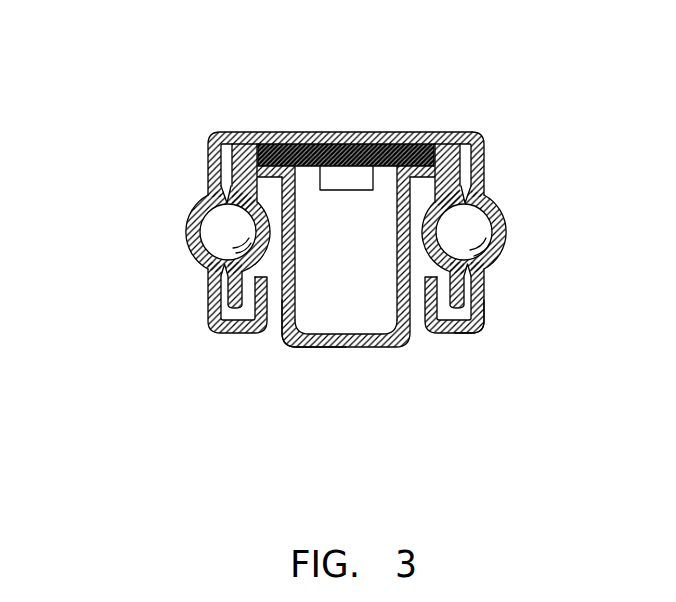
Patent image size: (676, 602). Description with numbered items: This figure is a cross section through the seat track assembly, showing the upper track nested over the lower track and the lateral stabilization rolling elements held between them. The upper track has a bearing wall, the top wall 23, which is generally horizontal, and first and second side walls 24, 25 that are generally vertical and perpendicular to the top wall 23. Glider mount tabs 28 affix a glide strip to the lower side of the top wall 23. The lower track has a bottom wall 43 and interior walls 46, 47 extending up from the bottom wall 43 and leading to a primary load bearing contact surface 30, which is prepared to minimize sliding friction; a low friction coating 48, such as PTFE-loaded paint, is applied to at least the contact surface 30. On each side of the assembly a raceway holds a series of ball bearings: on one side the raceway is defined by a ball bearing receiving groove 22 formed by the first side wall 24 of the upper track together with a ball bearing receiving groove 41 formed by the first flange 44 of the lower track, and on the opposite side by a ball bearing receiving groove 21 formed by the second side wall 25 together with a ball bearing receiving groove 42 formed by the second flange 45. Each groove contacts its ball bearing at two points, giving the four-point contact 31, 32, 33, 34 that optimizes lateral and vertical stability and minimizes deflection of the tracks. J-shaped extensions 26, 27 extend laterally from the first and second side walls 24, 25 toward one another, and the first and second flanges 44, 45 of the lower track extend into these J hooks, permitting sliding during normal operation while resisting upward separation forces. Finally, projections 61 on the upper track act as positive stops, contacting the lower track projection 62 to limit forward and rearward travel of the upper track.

The ball bearing receiving groove 21 is at (484, 239).
The ball bearing receiving groove 22 is at (187, 227).
The top wall 23 is at (366, 131).
The first side wall 24 is at (209, 290).
The second side wall 25 is at (483, 298).
The J-shaped extension 26 is at (238, 340).
The J-shaped extension 27 is at (466, 338).
The glider mount tabs 28 is at (345, 131).
The primary load bearing contact surface 30 is at (242, 131).
The four-point contact 31 is at (203, 197).
The four-point contact 32 is at (197, 272).
The four-point contact 33 is at (497, 252).
The four-point contact 34 is at (484, 214).
The ball bearing receiving groove 41 is at (298, 243).
The ball bearing receiving groove 42 is at (396, 230).
The bottom wall 43 is at (353, 350).
The first flange 44 is at (210, 317).
The second flange 45 is at (428, 328).
The interior wall 46 is at (323, 350).
The interior wall 47 is at (366, 349).
The low friction coating 48 is at (462, 131).
The first and second projections 61 is at (475, 335).
The lower track projection 62 is at (454, 333).